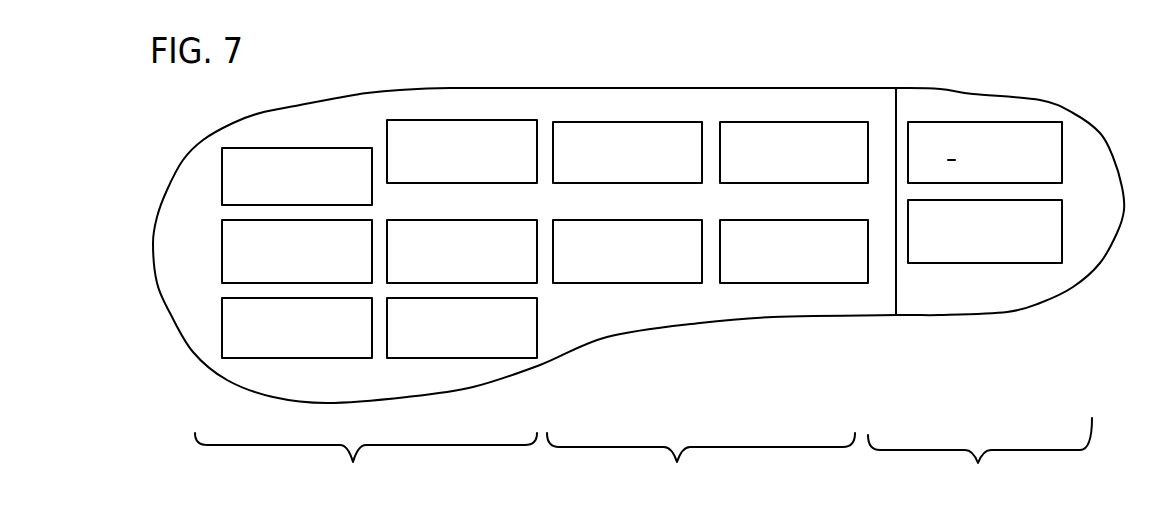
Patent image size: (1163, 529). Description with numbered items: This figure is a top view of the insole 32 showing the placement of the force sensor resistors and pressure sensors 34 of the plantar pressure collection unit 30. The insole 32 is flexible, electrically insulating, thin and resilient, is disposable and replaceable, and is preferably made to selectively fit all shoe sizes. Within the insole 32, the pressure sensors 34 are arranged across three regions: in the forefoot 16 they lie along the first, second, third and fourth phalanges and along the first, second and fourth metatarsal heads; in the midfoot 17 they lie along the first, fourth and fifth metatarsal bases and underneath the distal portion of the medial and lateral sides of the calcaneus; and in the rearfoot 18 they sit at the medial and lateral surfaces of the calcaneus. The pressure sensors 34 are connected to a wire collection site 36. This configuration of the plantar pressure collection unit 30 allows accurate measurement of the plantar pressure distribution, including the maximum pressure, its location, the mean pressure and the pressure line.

The forefoot 16 is at (366, 468).
The midfoot 17 is at (701, 468).
The rearfoot 18 is at (980, 460).
The plantar pressure collection unit 30 is at (235, 318).
The insole 32 is at (1059, 82).
The force sensor resistors and pressure sensors 34 is at (642, 239).
The wire collection site 36 is at (858, 157).